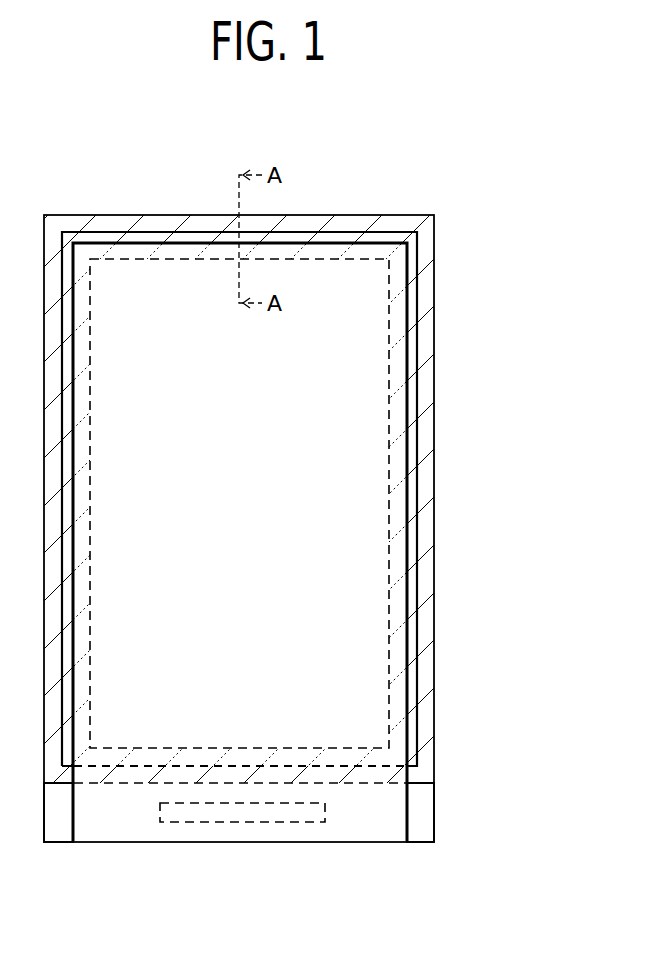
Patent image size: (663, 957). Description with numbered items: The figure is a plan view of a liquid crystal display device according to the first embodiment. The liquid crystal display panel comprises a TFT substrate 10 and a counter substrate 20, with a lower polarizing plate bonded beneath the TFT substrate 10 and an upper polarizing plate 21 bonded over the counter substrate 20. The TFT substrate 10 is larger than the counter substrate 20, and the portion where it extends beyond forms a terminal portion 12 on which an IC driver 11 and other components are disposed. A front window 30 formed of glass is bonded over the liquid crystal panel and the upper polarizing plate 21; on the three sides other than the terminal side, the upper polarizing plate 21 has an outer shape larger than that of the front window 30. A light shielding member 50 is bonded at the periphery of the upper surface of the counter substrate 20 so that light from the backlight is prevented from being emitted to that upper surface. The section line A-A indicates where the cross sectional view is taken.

The TFT substrate 10 is at (435, 802).
The IC driver 11 is at (265, 822).
The terminal portion 12 is at (420, 822).
The counter substrate 20 is at (435, 713).
The upper polarizing plate 21 is at (418, 285).
The front window 30 is at (410, 540).
The light shielding member 50 is at (389, 410).